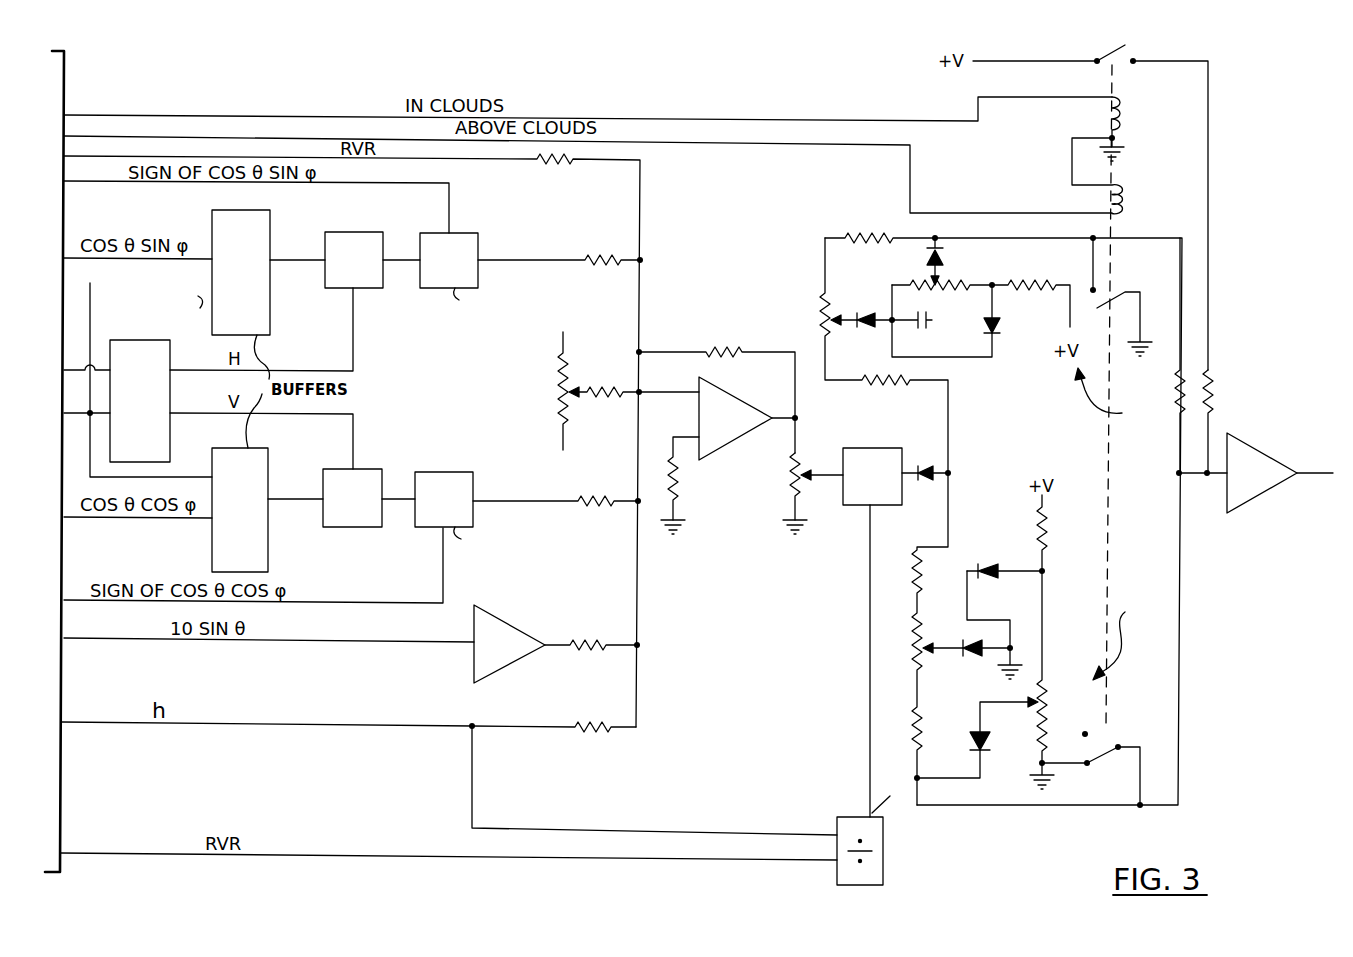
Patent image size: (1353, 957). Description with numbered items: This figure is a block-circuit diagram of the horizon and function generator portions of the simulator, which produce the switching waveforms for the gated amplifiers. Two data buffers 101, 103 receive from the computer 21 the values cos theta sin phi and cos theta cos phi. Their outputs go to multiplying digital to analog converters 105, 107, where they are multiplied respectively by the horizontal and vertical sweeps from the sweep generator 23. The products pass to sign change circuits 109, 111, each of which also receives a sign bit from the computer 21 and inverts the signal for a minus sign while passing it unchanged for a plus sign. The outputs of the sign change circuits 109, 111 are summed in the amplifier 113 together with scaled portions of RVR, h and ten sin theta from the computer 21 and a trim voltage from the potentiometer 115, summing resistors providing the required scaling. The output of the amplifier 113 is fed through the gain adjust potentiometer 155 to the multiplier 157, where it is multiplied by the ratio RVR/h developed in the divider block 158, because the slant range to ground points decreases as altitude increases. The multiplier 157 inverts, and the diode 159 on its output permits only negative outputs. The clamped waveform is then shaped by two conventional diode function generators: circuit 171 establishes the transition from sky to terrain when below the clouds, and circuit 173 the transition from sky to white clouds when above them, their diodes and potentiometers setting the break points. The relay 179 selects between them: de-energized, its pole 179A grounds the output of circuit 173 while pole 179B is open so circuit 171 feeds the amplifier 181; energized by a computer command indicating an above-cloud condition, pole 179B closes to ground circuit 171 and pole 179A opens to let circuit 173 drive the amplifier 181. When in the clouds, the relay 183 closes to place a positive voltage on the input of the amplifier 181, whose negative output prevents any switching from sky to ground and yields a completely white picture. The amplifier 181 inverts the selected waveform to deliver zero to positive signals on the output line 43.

The computer 21 is at (65, 83).
The sweep generator 23 is at (137, 340).
The output line of function generator 43 is at (1310, 474).
The data buffer 101 is at (270, 225).
The data buffer 103 is at (268, 543).
The multiplying digital to analog converter 105 is at (365, 288).
The multiplying digital to analog converter 107 is at (370, 469).
The sign change circuit 109 is at (475, 233).
The sign change circuit 111 is at (455, 472).
The summing amplifier 113 is at (720, 440).
The potentiometer 115 is at (552, 392).
The gain adjust potentiometer 155 is at (800, 457).
The multiplier 157 is at (902, 414).
The divider block 158 is at (883, 858).
The diode 159 is at (930, 480).
The shaping circuit 171 is at (1119, 395).
The shaping circuit 173 is at (1127, 642).
The relay 179 is at (1119, 201).
The relay pole 179A is at (1111, 746).
The relay pole 179B is at (1114, 297).
The amplifier 181 is at (1262, 450).
The relay 183 is at (1122, 118).